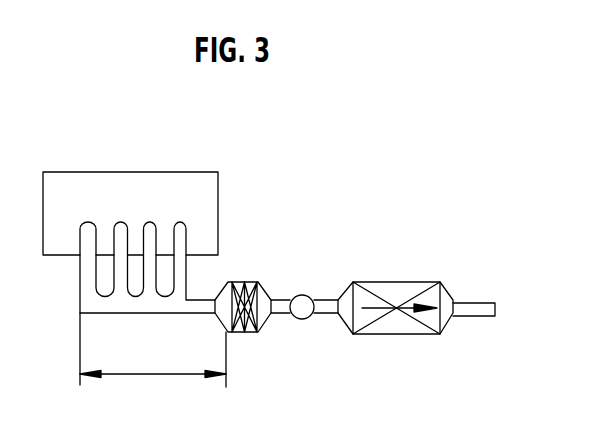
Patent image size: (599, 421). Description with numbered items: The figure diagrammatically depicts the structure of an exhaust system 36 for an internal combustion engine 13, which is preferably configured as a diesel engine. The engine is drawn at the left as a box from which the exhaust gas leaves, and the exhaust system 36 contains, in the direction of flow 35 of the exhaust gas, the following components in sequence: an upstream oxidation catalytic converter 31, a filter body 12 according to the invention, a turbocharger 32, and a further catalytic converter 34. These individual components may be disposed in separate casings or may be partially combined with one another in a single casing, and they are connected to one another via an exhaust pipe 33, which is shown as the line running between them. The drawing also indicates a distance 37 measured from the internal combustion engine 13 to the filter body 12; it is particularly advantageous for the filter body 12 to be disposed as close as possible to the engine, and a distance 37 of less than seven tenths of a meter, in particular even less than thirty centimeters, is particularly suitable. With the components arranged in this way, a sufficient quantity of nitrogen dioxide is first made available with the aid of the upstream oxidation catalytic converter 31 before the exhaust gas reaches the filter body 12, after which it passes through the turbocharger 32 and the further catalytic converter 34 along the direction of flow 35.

The internal combustion engine 13 is at (77, 187).
The filter body 12 is at (262, 287).
The upstream oxidation catalytic converter 31 is at (238, 283).
The turbocharger 32 is at (298, 315).
The exhaust pipe 33 is at (325, 314).
The further catalytic converter 34 is at (395, 334).
The direction of flow 35 is at (372, 307).
The exhaust system 36 is at (358, 258).
The distance 37 is at (145, 373).